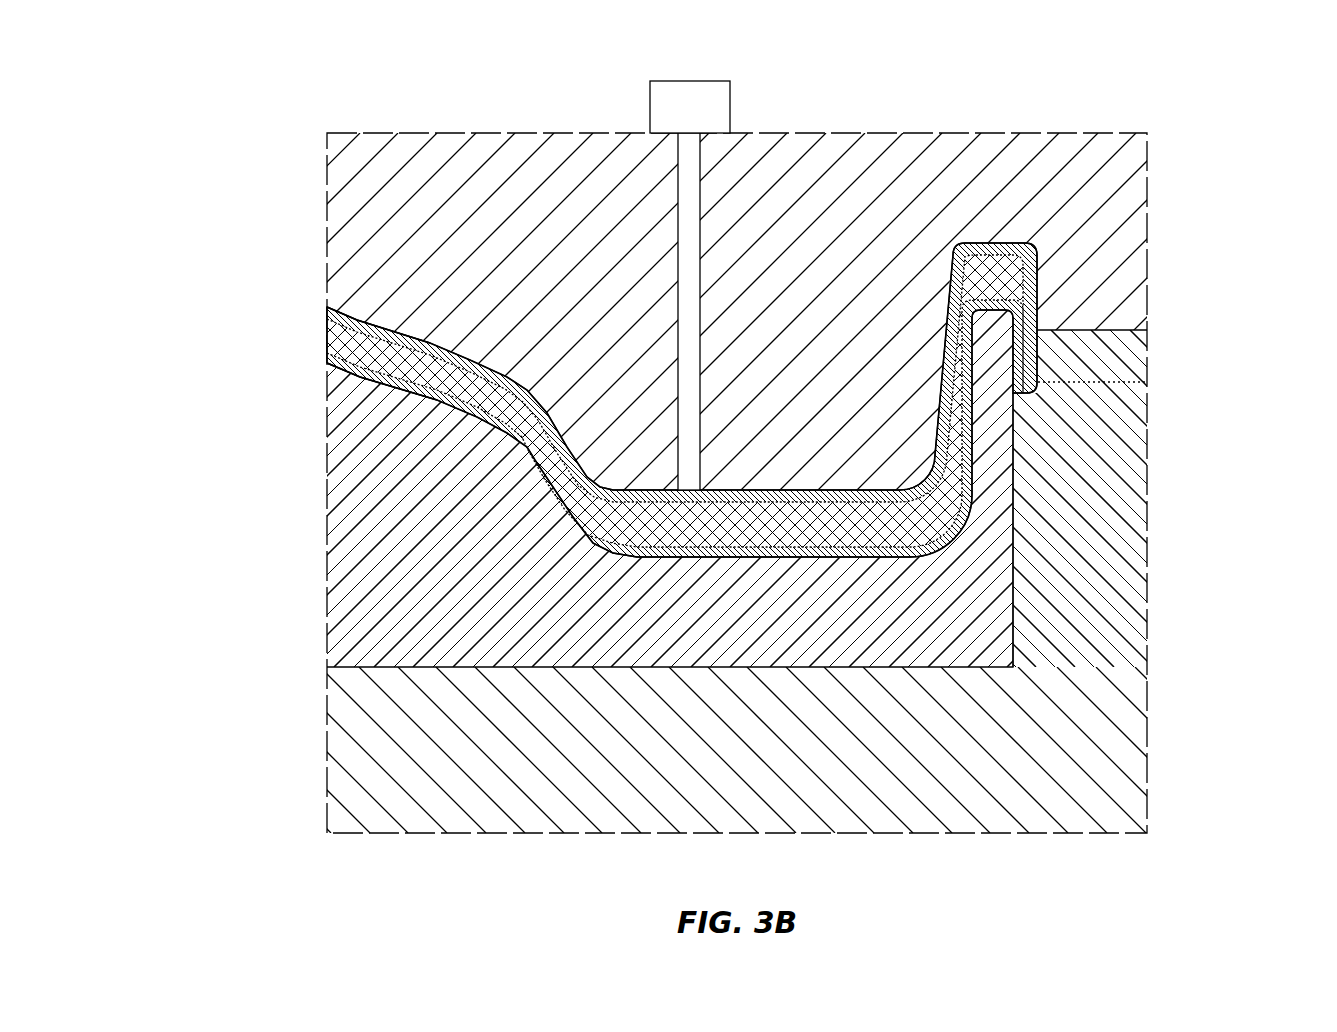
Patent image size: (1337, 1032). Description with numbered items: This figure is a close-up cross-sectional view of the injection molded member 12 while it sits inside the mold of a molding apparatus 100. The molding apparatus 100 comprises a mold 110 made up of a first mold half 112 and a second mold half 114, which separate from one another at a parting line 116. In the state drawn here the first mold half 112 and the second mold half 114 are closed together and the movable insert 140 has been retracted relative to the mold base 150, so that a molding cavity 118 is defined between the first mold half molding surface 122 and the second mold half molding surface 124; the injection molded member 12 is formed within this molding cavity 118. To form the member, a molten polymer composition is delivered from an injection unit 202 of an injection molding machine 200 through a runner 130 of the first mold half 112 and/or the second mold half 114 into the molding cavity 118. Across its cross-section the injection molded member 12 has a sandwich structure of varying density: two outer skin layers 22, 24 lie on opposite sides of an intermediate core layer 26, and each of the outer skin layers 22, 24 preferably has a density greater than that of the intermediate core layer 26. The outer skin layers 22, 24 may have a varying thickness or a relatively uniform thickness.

The molding apparatus 100 is at (668, 422).
The mold 110 is at (668, 456).
The first mold half 112 is at (308, 225).
The second mold half 114 is at (295, 565).
The parting line 116 is at (1155, 323).
The molding cavity 118 is at (313, 350).
The first mold half molding surface 122 is at (350, 317).
The second mold half molding surface 124 is at (332, 385).
The injection molded member 12 is at (597, 425).
The outer skin layer 22 is at (806, 485).
The outer skin layer 24 is at (737, 555).
The intermediate core layer 26 is at (820, 533).
The runner 130 is at (685, 173).
The movable insert 140 is at (1017, 533).
The mold base 150 is at (1143, 757).
The injection molding machine 200 is at (692, 266).
The injection unit 202 is at (690, 107).